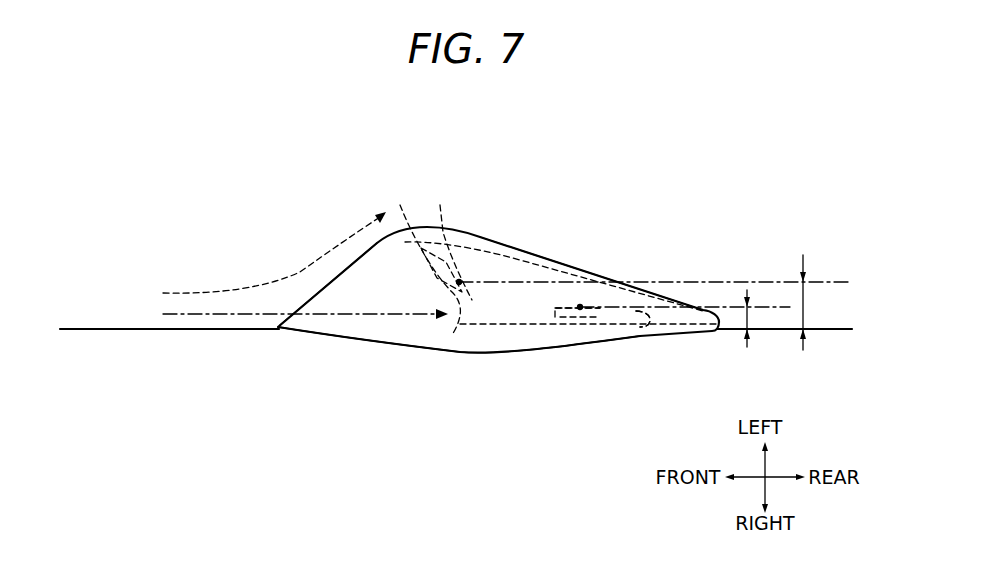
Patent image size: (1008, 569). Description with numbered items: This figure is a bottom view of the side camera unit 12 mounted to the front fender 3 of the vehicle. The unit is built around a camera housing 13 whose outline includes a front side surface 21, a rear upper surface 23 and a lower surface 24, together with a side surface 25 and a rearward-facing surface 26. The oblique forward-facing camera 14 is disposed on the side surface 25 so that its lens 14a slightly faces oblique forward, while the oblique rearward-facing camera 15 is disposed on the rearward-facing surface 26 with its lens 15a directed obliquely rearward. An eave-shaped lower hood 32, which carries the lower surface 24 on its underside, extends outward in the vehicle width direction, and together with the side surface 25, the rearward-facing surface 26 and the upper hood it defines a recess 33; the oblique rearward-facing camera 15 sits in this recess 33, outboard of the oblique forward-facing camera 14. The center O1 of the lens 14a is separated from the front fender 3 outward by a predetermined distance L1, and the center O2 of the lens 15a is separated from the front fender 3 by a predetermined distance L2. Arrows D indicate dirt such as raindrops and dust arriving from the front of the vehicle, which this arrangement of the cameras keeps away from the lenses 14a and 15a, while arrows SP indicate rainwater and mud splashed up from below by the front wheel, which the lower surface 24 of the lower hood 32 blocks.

The front fender 3 is at (104, 327).
The side camera unit 12 is at (518, 176).
The camera housing 13 is at (347, 339).
The oblique forward-facing camera 14 is at (555, 323).
The lens 14a is at (575, 304).
The oblique rearward-facing camera 15 is at (452, 335).
The lens 15a is at (448, 242).
The front side surface 21 is at (340, 278).
The rear upper surface 23 is at (617, 279).
The lower surface 24 is at (388, 333).
The side surface 25 is at (646, 320).
The rearward-facing surface 26 is at (287, 238).
The lower hood 32 is at (499, 262).
The recess 33 is at (526, 258).
The center of the lens 14a O1 is at (580, 307).
The center of the lens 15a O2 is at (459, 282).
The arrows SP is at (538, 296).
The arrows D is at (296, 306).
The predetermined distance L1 is at (758, 318).
The predetermined distance L2 is at (814, 302).